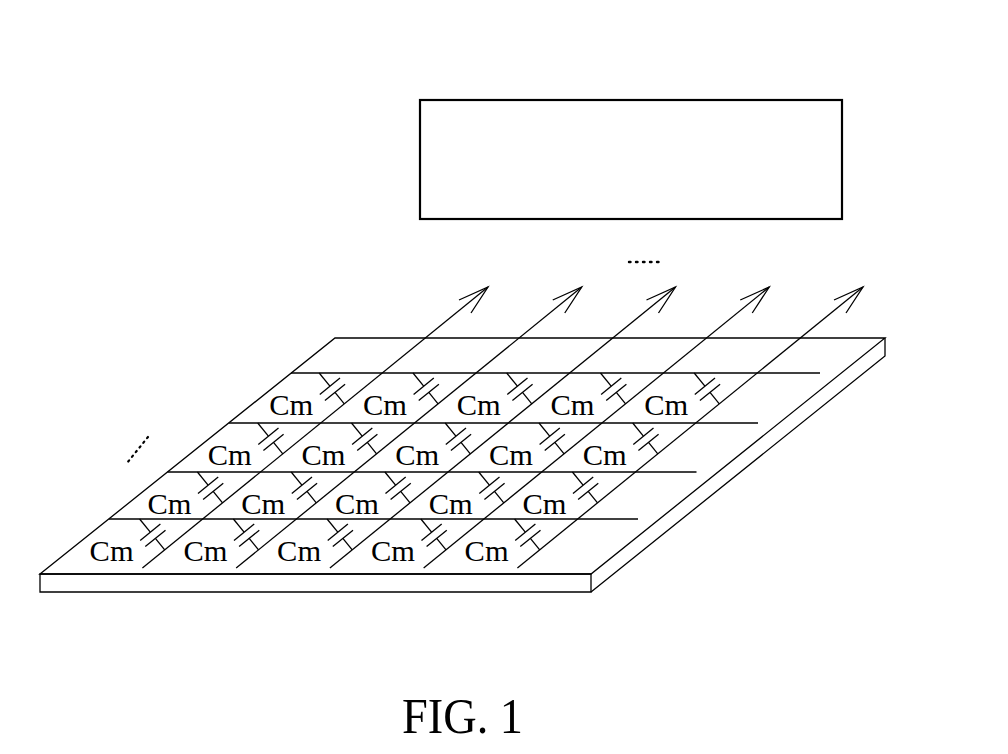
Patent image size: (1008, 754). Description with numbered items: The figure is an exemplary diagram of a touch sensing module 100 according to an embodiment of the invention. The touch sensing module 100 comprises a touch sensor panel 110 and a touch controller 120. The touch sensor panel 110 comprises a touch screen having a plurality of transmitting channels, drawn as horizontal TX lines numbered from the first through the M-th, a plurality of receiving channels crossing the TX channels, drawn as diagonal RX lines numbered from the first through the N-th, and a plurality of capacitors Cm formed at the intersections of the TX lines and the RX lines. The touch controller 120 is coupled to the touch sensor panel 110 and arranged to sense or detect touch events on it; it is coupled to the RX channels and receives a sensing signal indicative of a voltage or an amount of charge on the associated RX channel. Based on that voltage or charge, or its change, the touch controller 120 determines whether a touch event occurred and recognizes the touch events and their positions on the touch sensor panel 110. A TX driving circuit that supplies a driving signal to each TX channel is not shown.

The touch sensing module 100 is at (214, 78).
The touch sensor panel 110 is at (738, 463).
The touch controller 120 is at (632, 100).